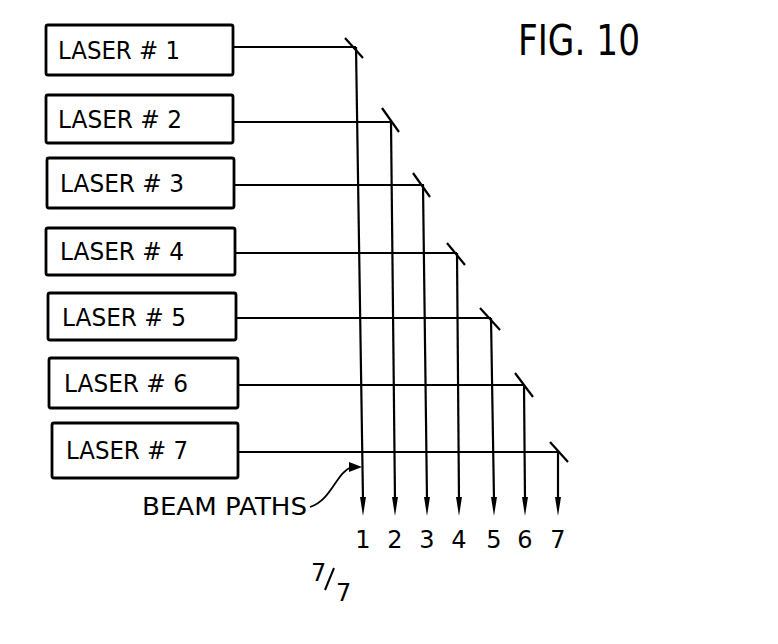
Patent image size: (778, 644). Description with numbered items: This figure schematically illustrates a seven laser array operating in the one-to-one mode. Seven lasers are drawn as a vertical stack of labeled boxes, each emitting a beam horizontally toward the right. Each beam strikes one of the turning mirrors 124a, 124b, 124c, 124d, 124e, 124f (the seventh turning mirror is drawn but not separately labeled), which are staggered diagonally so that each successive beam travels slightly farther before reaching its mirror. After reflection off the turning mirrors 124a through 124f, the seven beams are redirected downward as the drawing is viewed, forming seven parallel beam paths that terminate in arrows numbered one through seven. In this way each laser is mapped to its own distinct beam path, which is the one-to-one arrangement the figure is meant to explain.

The turning mirror 124a is at (351, 39).
The turning mirror 124b is at (388, 110).
The turning mirror 124c is at (419, 175).
The turning mirror 124d is at (453, 245).
The turning mirror 124e is at (486, 310).
The turning mirror 124f is at (521, 375).